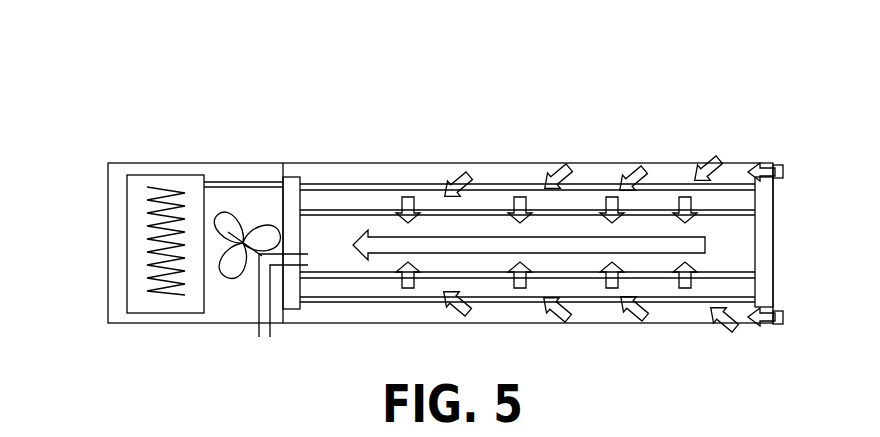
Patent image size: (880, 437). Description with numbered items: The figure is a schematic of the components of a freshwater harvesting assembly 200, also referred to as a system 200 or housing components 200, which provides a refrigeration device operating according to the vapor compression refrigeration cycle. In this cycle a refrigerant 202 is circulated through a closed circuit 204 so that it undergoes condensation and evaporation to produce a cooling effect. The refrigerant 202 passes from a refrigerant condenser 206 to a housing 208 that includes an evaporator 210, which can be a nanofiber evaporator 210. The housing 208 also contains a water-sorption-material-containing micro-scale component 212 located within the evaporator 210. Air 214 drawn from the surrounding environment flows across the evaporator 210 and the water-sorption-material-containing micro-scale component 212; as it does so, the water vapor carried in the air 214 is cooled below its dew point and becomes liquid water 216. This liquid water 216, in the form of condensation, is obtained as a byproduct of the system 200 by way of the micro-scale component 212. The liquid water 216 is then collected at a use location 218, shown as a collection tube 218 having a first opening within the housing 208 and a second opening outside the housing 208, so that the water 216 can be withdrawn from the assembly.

The freshwater harvesting assembly 200 is at (202, 132).
The refrigerant 202 is at (220, 163).
The closed circuit 204 is at (270, 183).
The refrigerant condenser 206 is at (153, 240).
The housing 208 is at (470, 163).
The evaporator 210 is at (338, 185).
The water-sorption-material-containing micro-scale component 212 is at (368, 277).
The air 214 is at (645, 182).
The liquid water 216 is at (705, 243).
The collection tube 218 is at (258, 330).